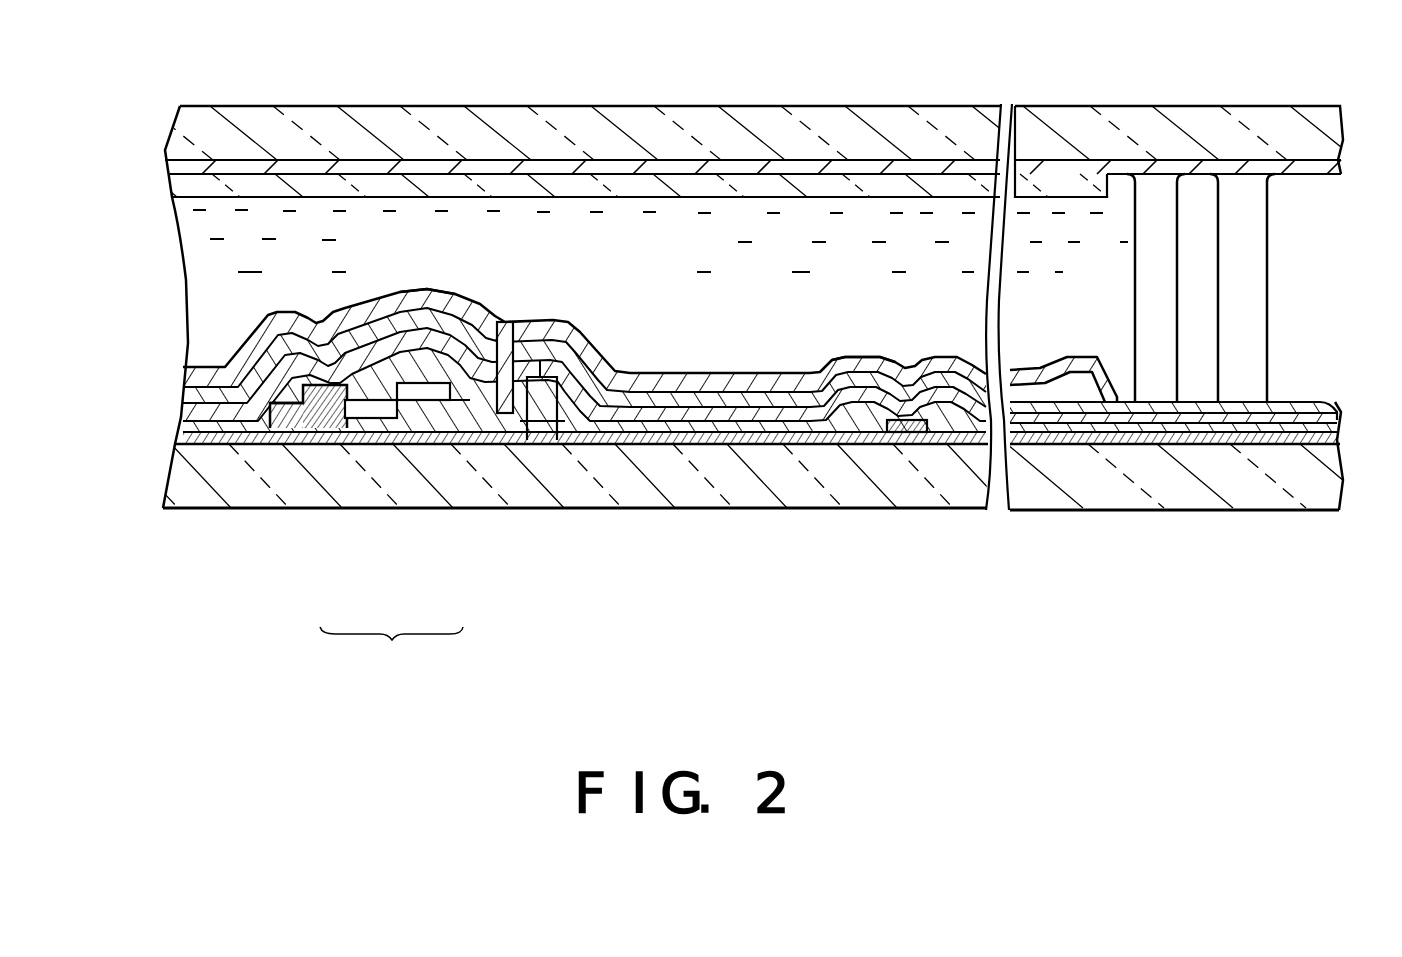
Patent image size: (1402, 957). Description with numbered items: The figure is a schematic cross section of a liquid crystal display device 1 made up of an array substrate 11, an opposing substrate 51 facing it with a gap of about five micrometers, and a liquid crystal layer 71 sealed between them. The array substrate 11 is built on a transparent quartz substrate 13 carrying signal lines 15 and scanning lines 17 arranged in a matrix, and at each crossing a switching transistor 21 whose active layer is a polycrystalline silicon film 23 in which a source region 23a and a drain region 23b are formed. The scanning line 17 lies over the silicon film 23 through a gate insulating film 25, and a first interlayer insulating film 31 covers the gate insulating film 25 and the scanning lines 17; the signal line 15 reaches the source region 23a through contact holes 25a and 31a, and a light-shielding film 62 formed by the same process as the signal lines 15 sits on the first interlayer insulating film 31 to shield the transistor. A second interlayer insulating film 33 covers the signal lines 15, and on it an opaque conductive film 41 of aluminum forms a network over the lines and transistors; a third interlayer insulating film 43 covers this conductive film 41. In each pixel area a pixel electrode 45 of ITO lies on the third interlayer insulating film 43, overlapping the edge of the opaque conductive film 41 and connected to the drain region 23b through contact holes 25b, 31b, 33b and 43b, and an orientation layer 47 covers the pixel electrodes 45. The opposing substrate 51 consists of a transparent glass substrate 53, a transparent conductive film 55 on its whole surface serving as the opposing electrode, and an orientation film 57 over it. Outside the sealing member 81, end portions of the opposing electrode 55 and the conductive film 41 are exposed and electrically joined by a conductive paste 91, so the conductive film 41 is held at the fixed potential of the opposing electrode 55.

The liquid crystal display device 1 is at (865, 82).
The array substrate 11 is at (1153, 518).
The substrate 13 is at (855, 500).
The signal line 15 is at (333, 440).
The scanning line 17 is at (400, 440).
The switching transistor 21 is at (391, 652).
The polycrystalline silicon film 23 is at (445, 440).
The source region 23a is at (348, 440).
The drain region 23b is at (483, 440).
The gate insulating film 25 is at (290, 438).
The contact hole 25a is at (287, 440).
The contact hole 25b is at (522, 440).
The first interlayer insulating film 31 is at (252, 452).
The contact hole 31a is at (240, 447).
The contact hole 31b is at (527, 447).
The second interlayer insulating film 33 is at (182, 433).
The contact hole 33b is at (556, 335).
The opaque conductive film 41 is at (250, 345).
The third interlayer insulating film 43 is at (183, 412).
The contact hole 43b is at (514, 320).
The pixel electrode 45 is at (693, 407).
The orientation layer 47 is at (948, 365).
The opposing substrate 51 is at (1085, 93).
The glass substrate 53 is at (958, 125).
The transparent conductive film 55 is at (1338, 172).
The orientation film 57 is at (1087, 190).
The light-shielding film 62 is at (432, 330).
The liquid crystal layer 71 is at (690, 227).
The sealing member 81 is at (1162, 270).
The conductive paste 91 is at (1238, 302).